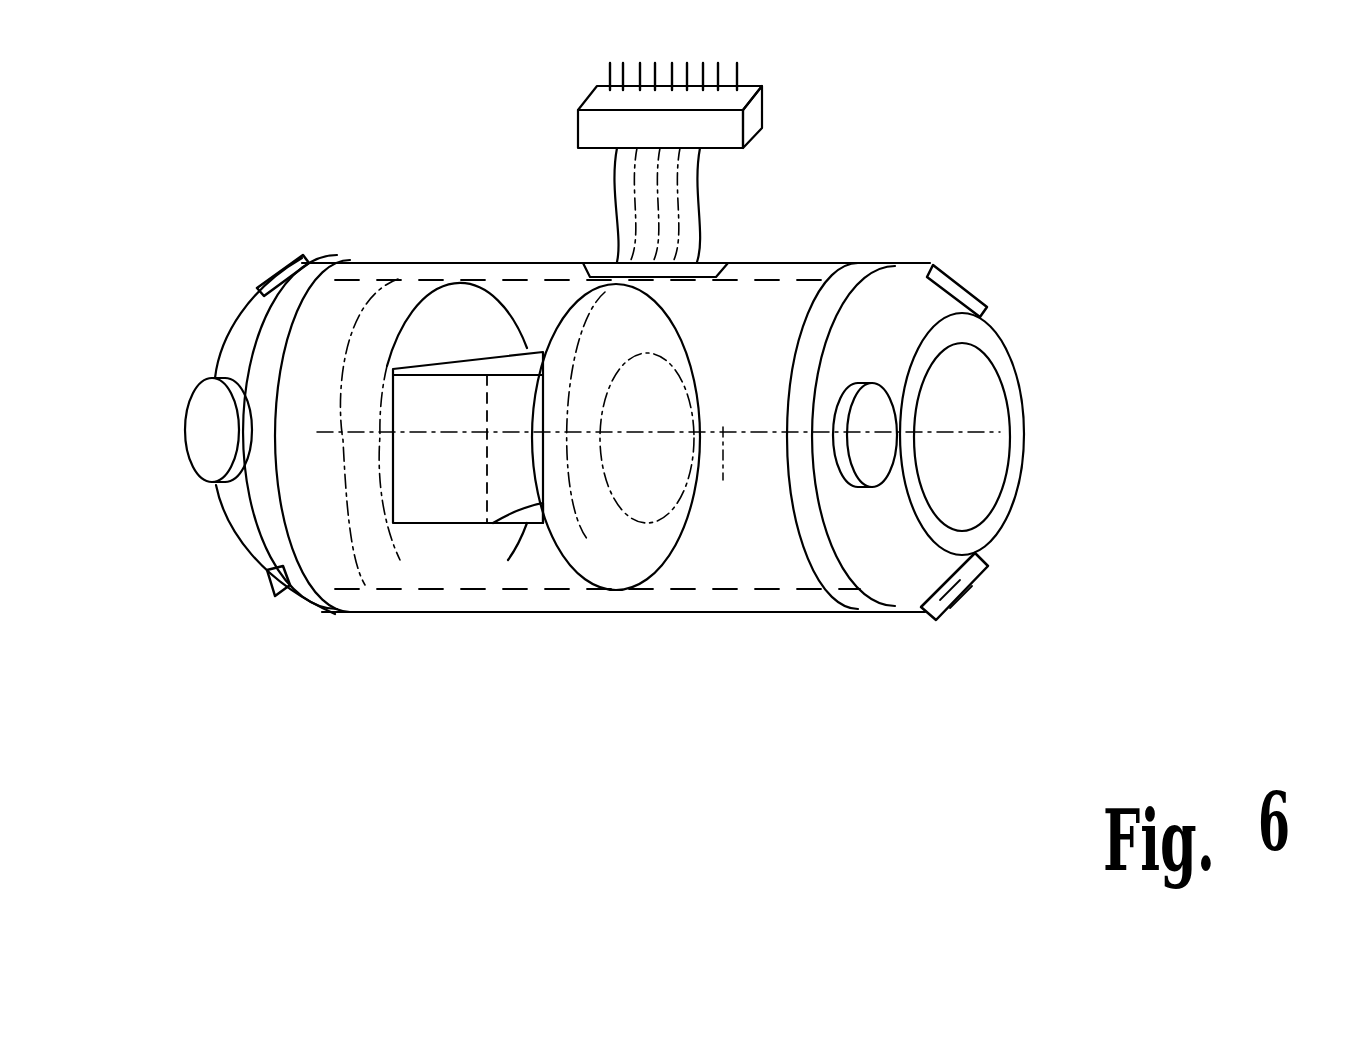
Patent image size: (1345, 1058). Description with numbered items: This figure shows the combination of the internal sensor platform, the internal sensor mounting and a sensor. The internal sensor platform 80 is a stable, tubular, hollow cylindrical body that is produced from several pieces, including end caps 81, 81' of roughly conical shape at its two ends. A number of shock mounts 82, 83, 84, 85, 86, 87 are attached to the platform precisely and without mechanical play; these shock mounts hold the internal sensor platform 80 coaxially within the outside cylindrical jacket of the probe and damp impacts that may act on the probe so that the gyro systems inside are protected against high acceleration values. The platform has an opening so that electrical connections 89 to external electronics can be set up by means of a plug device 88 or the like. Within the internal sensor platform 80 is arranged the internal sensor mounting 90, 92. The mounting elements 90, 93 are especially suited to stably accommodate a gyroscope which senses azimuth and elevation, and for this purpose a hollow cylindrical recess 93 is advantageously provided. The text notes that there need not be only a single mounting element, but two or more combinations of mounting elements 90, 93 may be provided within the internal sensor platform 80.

The internal sensor platform 80 is at (577, 620).
The end cap 81 is at (287, 374).
The end cap 81' is at (905, 368).
The shock mount 82 is at (190, 392).
The shock mount 83 is at (270, 268).
The shock mount 84 is at (268, 588).
The shock mount 85 is at (833, 468).
The shock mount 86 is at (993, 283).
The shock mount 87 is at (975, 597).
The plug device 88 is at (575, 132).
The electrical connections 89 is at (617, 207).
The internal sensor mounting 90 is at (722, 363).
The internal sensor mounting 92 is at (465, 478).
The hollow cylindrical recess 93 is at (530, 368).